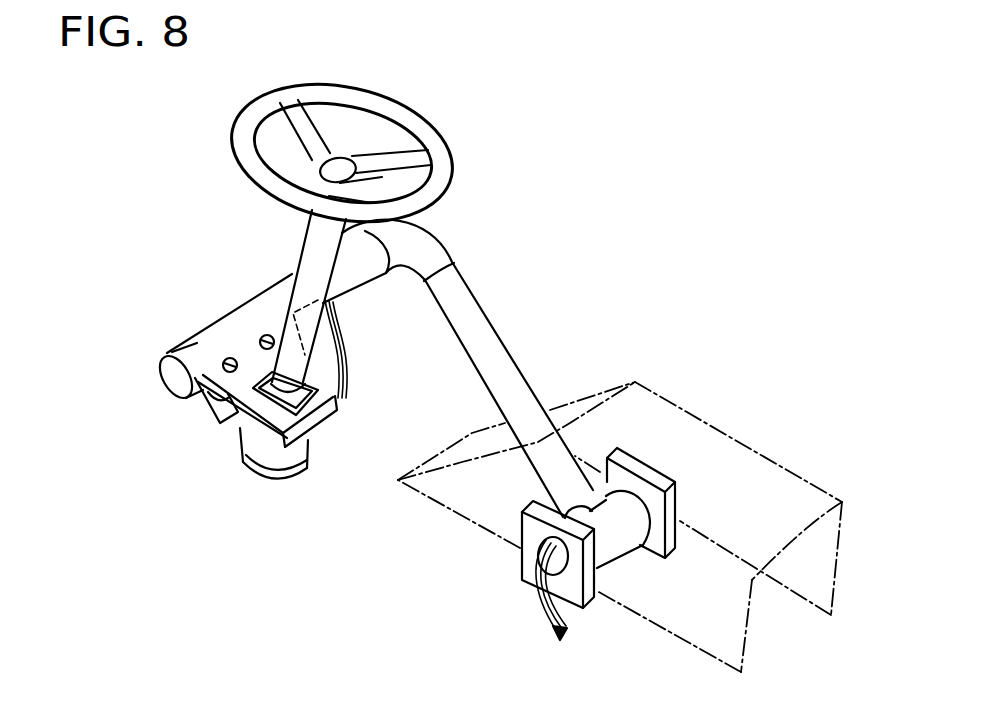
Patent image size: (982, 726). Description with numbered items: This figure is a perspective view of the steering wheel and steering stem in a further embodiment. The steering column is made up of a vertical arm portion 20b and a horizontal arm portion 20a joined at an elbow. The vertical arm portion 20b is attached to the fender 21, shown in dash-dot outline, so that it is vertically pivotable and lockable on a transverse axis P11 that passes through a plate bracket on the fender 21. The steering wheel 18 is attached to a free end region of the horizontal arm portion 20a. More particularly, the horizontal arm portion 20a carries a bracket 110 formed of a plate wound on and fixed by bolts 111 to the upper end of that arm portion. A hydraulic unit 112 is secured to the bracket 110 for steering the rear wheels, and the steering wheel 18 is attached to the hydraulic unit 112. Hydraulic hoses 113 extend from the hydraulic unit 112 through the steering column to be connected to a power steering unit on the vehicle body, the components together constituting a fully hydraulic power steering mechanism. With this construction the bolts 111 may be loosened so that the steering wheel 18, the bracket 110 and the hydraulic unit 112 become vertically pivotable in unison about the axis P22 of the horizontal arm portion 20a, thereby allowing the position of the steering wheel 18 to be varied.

The steering wheel 18 is at (436, 128).
The horizontal arm portion 20a is at (272, 298).
The vertical arm portion 20b is at (490, 327).
The fender 21 is at (693, 412).
The bracket 110 is at (322, 417).
The bolts 111 is at (262, 336).
The hydraulic unit 112 is at (268, 455).
The hydraulic hoses 113 is at (342, 351).
The transverse axis P11 is at (522, 580).
The axis of the horizontal arm portion P22 is at (180, 377).